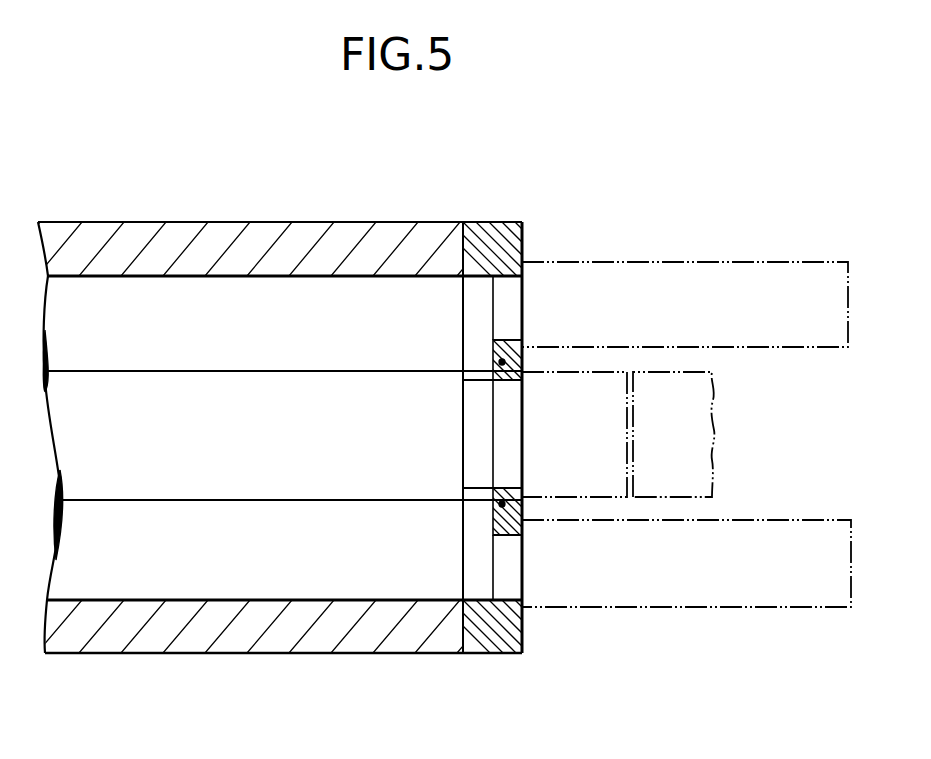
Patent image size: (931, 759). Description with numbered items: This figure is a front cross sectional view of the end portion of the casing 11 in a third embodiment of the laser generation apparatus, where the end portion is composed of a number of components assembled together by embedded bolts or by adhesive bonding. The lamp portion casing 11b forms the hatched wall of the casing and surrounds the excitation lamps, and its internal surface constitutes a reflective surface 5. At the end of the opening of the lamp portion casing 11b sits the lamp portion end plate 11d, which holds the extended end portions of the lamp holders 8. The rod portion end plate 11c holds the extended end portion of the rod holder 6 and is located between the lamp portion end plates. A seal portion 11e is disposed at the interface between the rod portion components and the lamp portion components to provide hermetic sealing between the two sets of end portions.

The reflective surface 5 is at (277, 277).
The rod holder 6 is at (602, 497).
The lamp holder 8 is at (663, 262).
The casing 11 is at (319, 432).
The lamp portion casing 11b is at (222, 222).
The rod portion end plate 11c is at (522, 372).
The lamp portion end plate 11d is at (512, 222).
The seal portion 11e is at (498, 488).